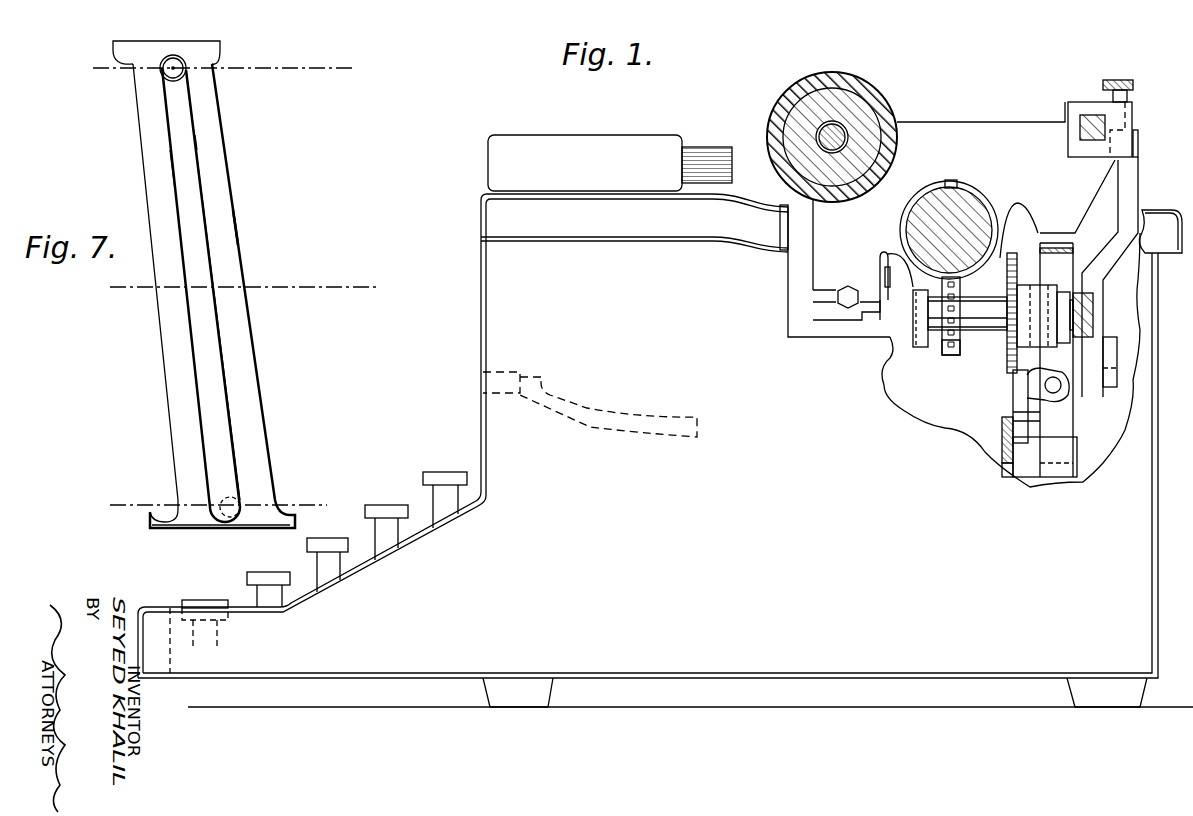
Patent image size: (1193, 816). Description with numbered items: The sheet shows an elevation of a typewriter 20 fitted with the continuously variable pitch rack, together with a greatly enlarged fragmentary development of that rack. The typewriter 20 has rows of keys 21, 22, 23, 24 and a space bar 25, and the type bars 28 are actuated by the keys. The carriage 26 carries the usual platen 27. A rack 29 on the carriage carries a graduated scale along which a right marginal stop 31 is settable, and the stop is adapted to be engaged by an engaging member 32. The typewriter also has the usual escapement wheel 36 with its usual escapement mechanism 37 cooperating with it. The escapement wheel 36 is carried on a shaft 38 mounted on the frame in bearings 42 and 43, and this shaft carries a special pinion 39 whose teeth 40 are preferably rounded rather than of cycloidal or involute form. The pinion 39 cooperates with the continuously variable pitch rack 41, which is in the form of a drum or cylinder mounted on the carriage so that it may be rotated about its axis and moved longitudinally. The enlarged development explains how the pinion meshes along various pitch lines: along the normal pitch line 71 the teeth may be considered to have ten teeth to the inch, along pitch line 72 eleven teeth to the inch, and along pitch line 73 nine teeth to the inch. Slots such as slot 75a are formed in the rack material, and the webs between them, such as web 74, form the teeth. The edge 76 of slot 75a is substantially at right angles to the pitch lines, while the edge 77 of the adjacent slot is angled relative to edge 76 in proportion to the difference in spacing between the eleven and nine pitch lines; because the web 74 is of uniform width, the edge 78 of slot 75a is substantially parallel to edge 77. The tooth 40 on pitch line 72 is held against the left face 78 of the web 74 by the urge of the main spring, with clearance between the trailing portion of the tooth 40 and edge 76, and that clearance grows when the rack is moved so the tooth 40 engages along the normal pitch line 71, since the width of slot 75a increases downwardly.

In FIG. 1, the typewriter 20 is at (793, 666).
In FIG. 1, the keys 21 is at (270, 576).
In FIG. 1, the keys 22 is at (333, 540).
In FIG. 1, the keys 23 is at (388, 505).
In FIG. 1, the keys 24 is at (446, 472).
In FIG. 1, the space bar 25 is at (200, 600).
In FIG. 1, the carriage 26 is at (952, 122).
In FIG. 1, the platen 27 is at (868, 92).
In FIG. 1, the type bars 28 is at (620, 410).
In FIG. 1, the rack 29 is at (1092, 115).
In FIG. 1, the right marginal stop 31 is at (1133, 118).
In FIG. 1, the engaging member 32 is at (1135, 175).
In FIG. 1, the escapement wheel 36 is at (1020, 250).
In FIG. 1, the escapement mechanism 37 is at (1025, 400).
In FIG. 1, the shaft 38 is at (983, 325).
In FIG. 1, the pinion 39 is at (950, 345).
In FIG. 1, the teeth 40 is at (952, 310).
In FIG. 7, the teeth 40 is at (175, 80).
In FIG. 1, the continuously variable pitch rack 41 is at (968, 190).
In FIG. 7, the continuously variable pitch rack 41 is at (175, 526).
In FIG. 1, the bearing 42 is at (915, 296).
In FIG. 1, the bearing 43 is at (1090, 310).
In FIG. 7, the normal pitch line 71 is at (350, 287).
In FIG. 7, the pitch line 72 is at (313, 68).
In FIG. 7, the pitch line 73 is at (325, 500).
In FIG. 7, the web 74 is at (220, 190).
In FIG. 7, the slot 75a is at (208, 330).
In FIG. 7, the edge 76 is at (177, 172).
In FIG. 7, the edge 77 is at (237, 228).
In FIG. 7, the edge 78 is at (192, 146).